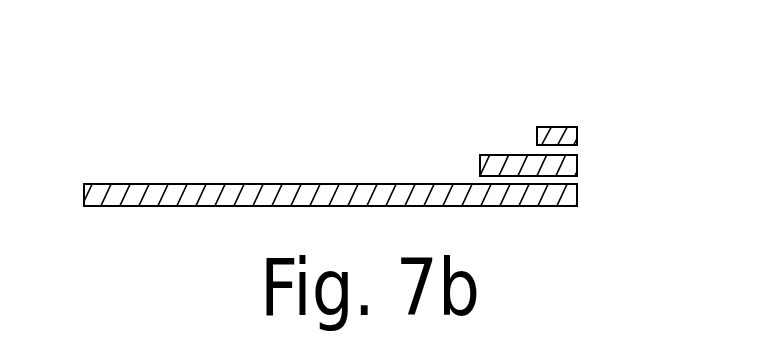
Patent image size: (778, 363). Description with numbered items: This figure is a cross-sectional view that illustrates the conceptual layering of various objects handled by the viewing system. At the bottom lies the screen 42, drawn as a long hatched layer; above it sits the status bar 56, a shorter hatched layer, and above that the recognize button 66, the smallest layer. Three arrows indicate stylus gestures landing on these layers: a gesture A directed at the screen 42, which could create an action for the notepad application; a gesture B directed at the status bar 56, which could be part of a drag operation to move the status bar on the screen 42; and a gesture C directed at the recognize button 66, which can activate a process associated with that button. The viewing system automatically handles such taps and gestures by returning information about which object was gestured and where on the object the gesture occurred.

The screen 42 is at (577, 198).
The status bar 56 is at (575, 170).
The recognize button 66 is at (574, 132).
The gesture A is at (358, 175).
The gesture B is at (497, 147).
The gesture C is at (553, 113).